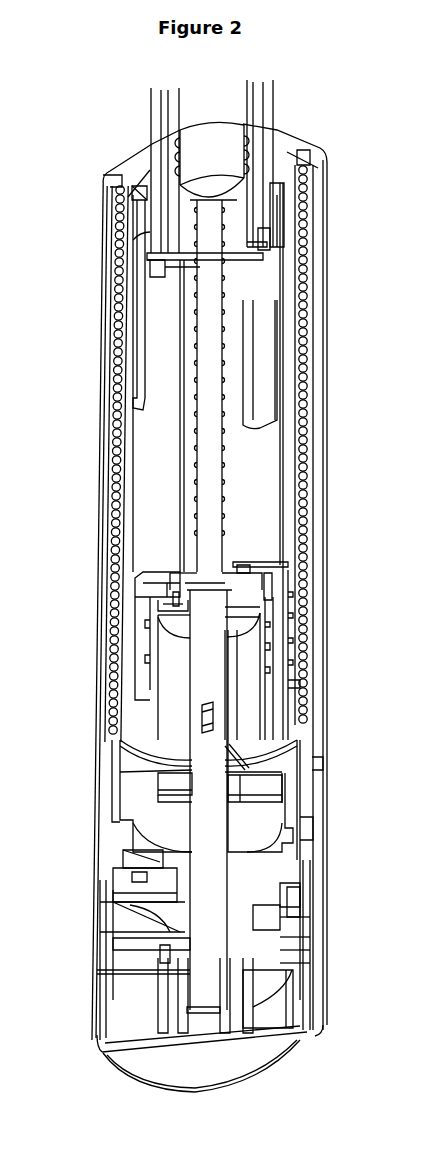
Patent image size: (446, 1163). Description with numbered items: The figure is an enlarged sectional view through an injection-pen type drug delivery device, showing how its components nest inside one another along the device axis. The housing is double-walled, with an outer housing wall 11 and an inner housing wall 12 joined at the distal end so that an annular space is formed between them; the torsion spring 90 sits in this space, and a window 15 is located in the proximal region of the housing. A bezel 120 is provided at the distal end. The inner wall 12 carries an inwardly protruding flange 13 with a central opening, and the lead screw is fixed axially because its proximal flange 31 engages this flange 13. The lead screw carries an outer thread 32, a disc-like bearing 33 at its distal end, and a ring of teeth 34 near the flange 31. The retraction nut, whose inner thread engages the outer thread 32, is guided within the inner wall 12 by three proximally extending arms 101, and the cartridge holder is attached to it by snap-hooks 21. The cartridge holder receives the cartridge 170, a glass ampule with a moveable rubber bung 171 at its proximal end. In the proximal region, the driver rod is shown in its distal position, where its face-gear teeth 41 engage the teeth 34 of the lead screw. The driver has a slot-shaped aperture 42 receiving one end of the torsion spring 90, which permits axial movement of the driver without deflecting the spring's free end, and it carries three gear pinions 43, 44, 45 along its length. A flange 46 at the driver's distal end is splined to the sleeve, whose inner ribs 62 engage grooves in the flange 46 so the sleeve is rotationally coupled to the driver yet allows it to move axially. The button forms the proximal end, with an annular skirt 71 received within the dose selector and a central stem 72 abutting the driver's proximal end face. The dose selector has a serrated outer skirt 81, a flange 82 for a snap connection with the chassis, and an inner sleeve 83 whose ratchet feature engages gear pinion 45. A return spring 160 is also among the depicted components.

The outer housing wall 11 is at (108, 217).
The bezel 120 is at (112, 170).
The torsion spring 90 is at (118, 260).
The inner housing wall 12 is at (130, 295).
The arms 101 is at (137, 335).
The rubber bung 171 is at (197, 138).
The cartridge 170 is at (252, 118).
The bearing 33 is at (240, 177).
The snap-hooks 21 is at (280, 233).
The outer thread 32 is at (223, 493).
The proximal flange 31 is at (243, 570).
The flange 13 is at (270, 568).
The ring of teeth 34 is at (195, 590).
The teeth 41 is at (190, 590).
The return spring 160 is at (177, 598).
The flange 46 is at (167, 608).
The ribs 62 is at (233, 660).
The aperture 42 is at (210, 710).
The window 15 is at (322, 820).
The gear pinion 43 is at (177, 860).
The gear pinion 44 is at (177, 897).
The gear pinion 45 is at (187, 928).
The inner sleeve 83 is at (160, 952).
The serrated outer skirt 81 is at (93, 997).
The flange 82 is at (300, 918).
The annular skirt 71 is at (298, 1005).
The central stem 72 is at (277, 1065).